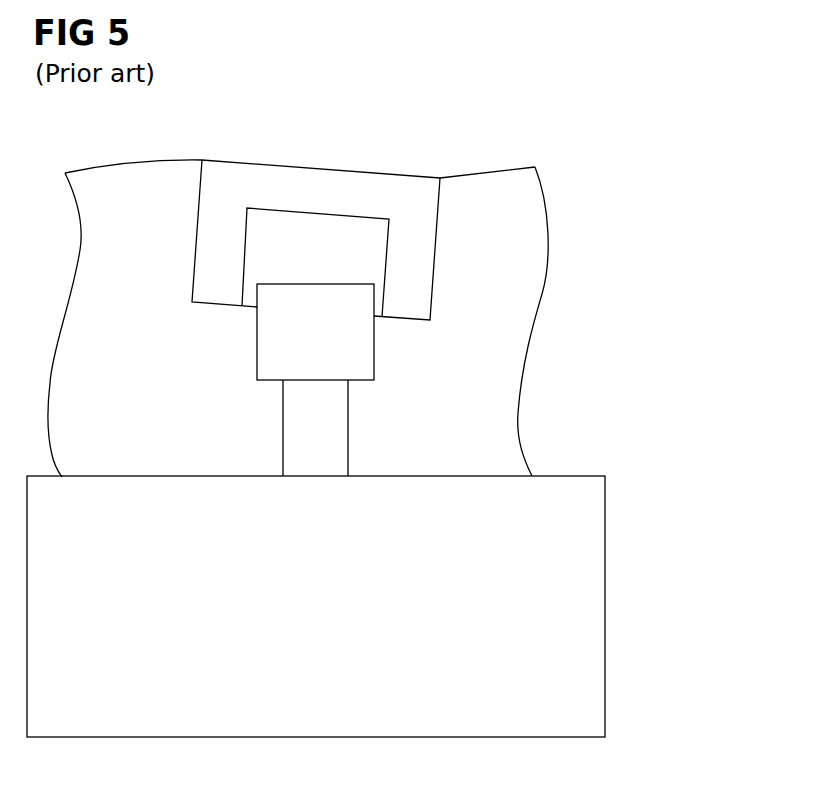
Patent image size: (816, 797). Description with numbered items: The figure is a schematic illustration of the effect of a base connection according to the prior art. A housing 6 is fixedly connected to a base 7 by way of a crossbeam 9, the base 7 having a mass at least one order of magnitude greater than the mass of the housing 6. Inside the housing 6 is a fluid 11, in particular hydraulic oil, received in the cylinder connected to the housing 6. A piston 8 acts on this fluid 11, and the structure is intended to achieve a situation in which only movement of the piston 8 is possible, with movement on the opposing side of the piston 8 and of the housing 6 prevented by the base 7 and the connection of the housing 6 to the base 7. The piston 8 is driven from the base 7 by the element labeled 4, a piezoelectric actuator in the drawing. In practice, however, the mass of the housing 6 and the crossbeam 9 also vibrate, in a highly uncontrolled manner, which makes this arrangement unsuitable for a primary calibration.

The piezoelectric actuator 4 is at (348, 430).
The housing 6 is at (435, 262).
The base 7 is at (565, 612).
The piston 8 is at (374, 362).
The crossbeam 9 is at (542, 294).
The fluid 11 is at (352, 257).